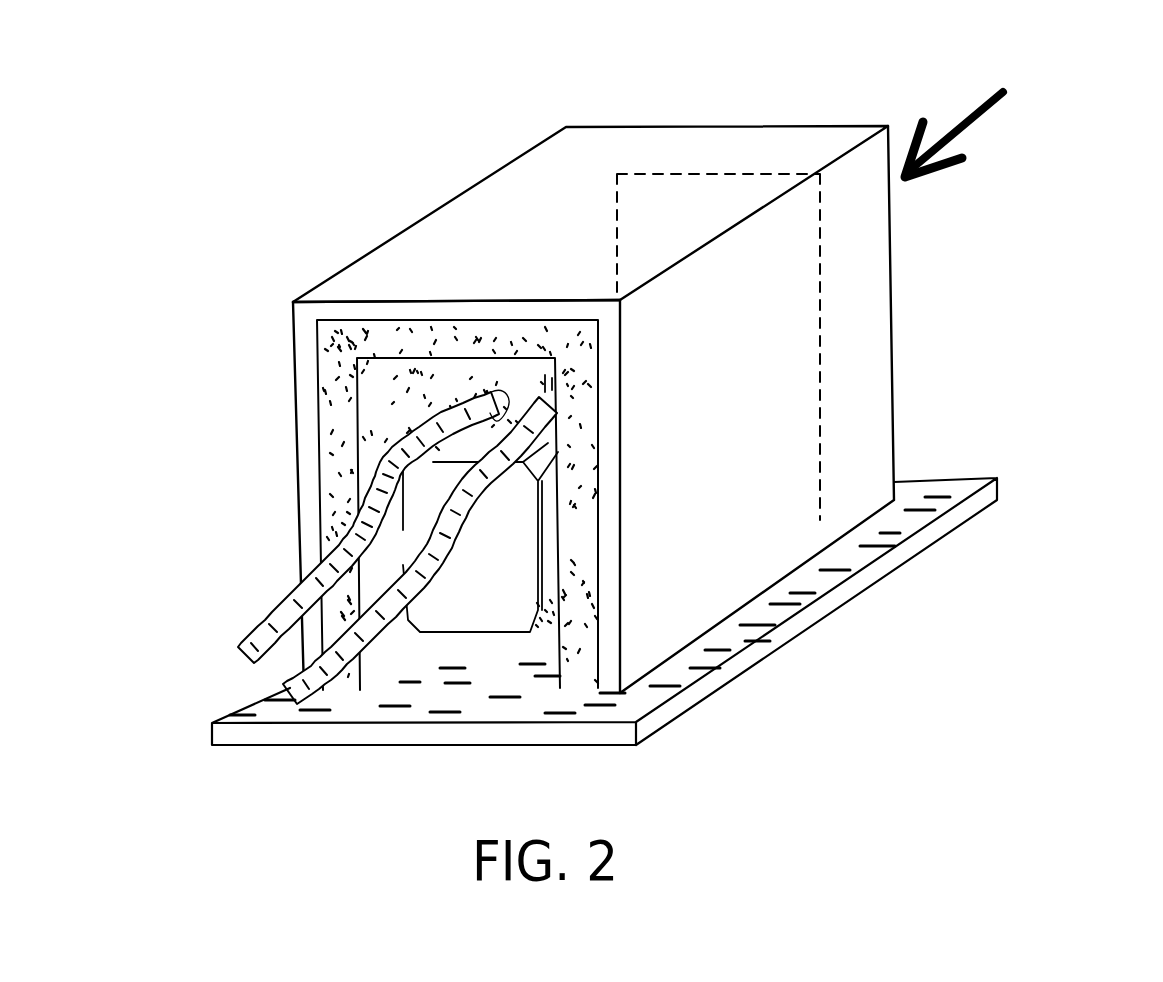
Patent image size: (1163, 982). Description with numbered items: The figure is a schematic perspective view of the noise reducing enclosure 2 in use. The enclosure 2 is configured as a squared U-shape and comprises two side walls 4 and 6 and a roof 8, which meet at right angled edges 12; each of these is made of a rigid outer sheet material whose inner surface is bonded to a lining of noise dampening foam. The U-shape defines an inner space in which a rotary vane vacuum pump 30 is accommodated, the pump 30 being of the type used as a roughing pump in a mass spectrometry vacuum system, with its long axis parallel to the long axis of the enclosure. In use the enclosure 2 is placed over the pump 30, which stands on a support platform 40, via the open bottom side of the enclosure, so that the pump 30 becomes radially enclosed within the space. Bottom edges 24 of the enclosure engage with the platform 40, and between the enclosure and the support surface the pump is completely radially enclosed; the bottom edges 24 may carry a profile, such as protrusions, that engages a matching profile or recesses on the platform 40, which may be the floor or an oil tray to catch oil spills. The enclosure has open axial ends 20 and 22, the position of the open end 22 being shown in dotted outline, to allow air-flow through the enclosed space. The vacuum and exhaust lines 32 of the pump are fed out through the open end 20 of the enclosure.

The enclosure 2 is at (606, 439).
The side wall 4 is at (642, 362).
The side wall 6 is at (541, 505).
The roof 8 is at (602, 163).
The right angled edges 12 is at (390, 237).
The open axial end 20 is at (380, 442).
The open axial end 22 is at (695, 182).
The bottom edges 24 is at (592, 663).
The rotary vane vacuum pump 30 is at (500, 533).
The vacuum and exhaust lines 32 is at (315, 522).
The support platform 40 is at (760, 637).